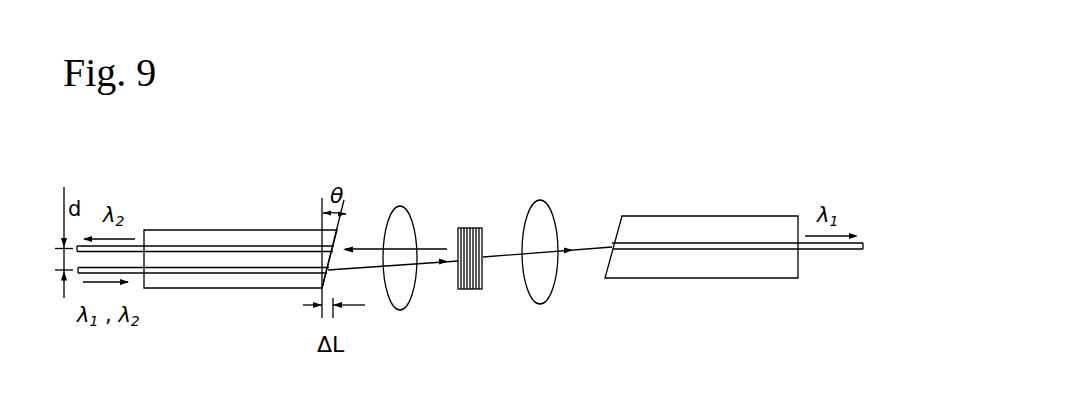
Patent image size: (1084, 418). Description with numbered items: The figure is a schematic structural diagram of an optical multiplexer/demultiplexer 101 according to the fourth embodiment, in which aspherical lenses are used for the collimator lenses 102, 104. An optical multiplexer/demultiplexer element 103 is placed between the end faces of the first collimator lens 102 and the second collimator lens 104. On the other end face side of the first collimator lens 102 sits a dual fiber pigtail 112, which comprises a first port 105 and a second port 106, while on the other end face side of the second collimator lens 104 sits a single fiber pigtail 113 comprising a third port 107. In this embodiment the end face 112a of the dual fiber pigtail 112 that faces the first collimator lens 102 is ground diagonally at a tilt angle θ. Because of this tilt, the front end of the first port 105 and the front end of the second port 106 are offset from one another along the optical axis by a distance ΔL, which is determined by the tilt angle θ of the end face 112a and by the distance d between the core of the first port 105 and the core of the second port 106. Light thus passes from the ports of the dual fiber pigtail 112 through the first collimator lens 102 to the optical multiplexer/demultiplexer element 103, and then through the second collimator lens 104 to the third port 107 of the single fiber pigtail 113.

The optical multiplexer/demultiplexer 101 is at (547, 185).
The first collimator lens 102 is at (402, 310).
The optical multiplexer/demultiplexer element 103 is at (470, 290).
The second collimator lens 104 is at (540, 305).
The first port 105 is at (200, 274).
The second port 106 is at (197, 246).
The third port 107 is at (693, 246).
The dual fiber pigtail 112 is at (250, 289).
The end face 112a is at (343, 243).
The single fiber pigtail 113 is at (717, 268).